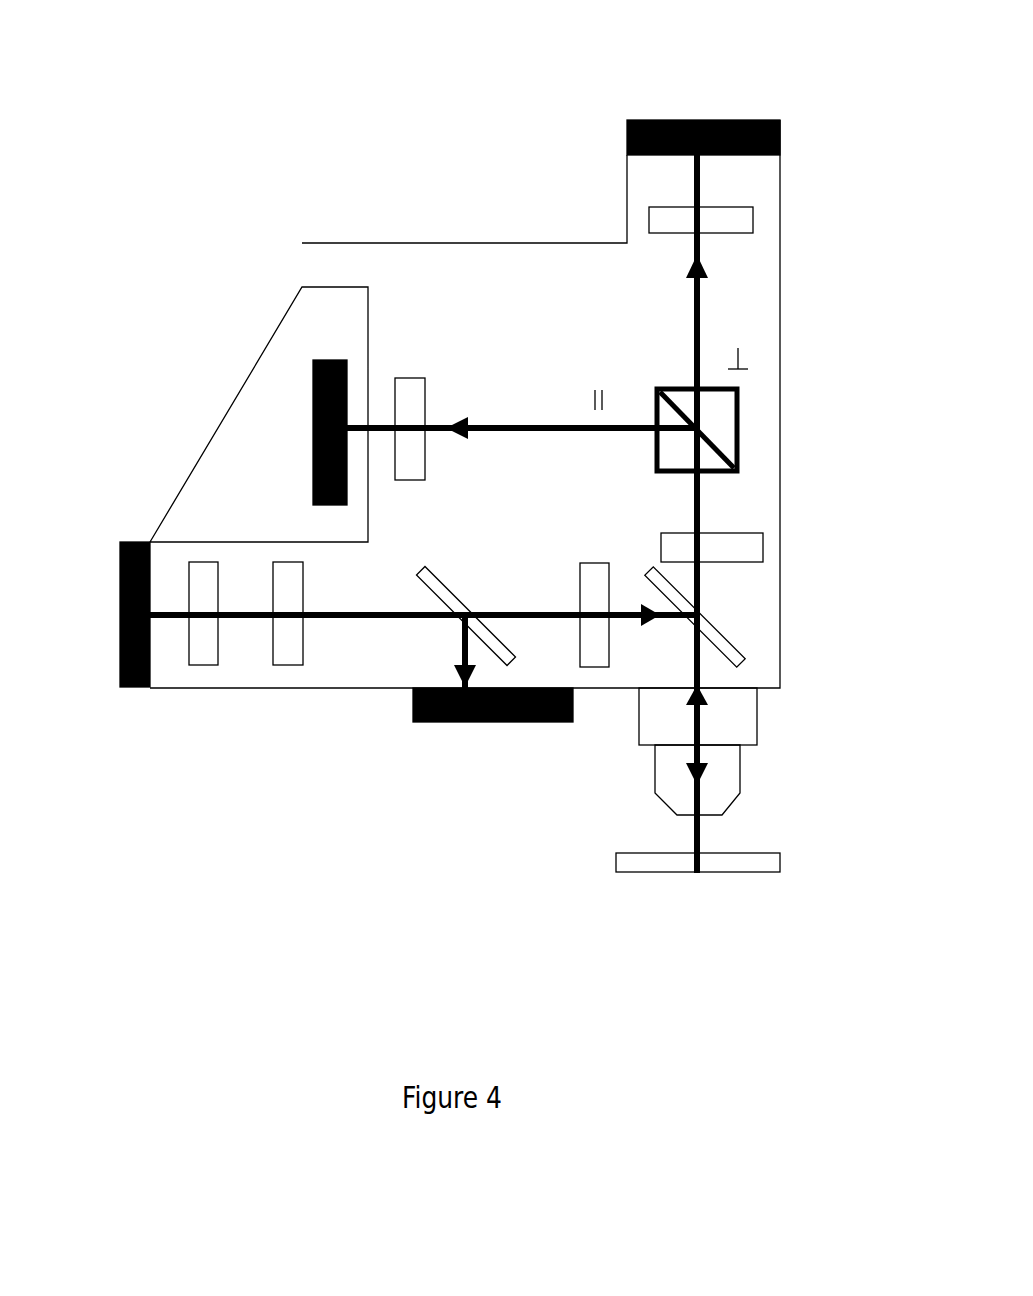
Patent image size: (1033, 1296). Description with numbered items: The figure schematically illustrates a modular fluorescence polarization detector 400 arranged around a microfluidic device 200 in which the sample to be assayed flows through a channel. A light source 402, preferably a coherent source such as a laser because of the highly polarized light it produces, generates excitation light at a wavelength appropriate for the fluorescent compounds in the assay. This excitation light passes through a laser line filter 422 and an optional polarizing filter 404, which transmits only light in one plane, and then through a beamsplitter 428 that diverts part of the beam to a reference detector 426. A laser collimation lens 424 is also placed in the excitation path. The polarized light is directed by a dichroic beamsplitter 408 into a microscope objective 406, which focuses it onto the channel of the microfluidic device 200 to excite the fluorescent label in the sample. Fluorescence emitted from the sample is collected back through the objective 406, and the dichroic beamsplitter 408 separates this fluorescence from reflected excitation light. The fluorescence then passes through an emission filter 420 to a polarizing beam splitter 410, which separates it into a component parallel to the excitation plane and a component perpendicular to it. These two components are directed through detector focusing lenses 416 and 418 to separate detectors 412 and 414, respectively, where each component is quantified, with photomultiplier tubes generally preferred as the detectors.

The fluorescence polarization detector 400 is at (168, 167).
The microfluidic device 200 is at (760, 852).
The light source 402 is at (118, 640).
The polarizing filter 404 is at (287, 668).
The microscope objective 406 is at (740, 780).
The dichroic beamsplitter 408 is at (715, 618).
The polarizing beam splitter 410 is at (740, 413).
The detector 412 is at (690, 118).
The detector 414 is at (314, 440).
The detector focusing lens 416 is at (750, 220).
The detector focusing lens 418 is at (418, 372).
The emission filter 420 is at (762, 548).
The laser line filter 422 is at (212, 668).
The laser collimation lens 424 is at (600, 672).
The reference detector 426 is at (503, 725).
The beamsplitter 428 is at (422, 590).